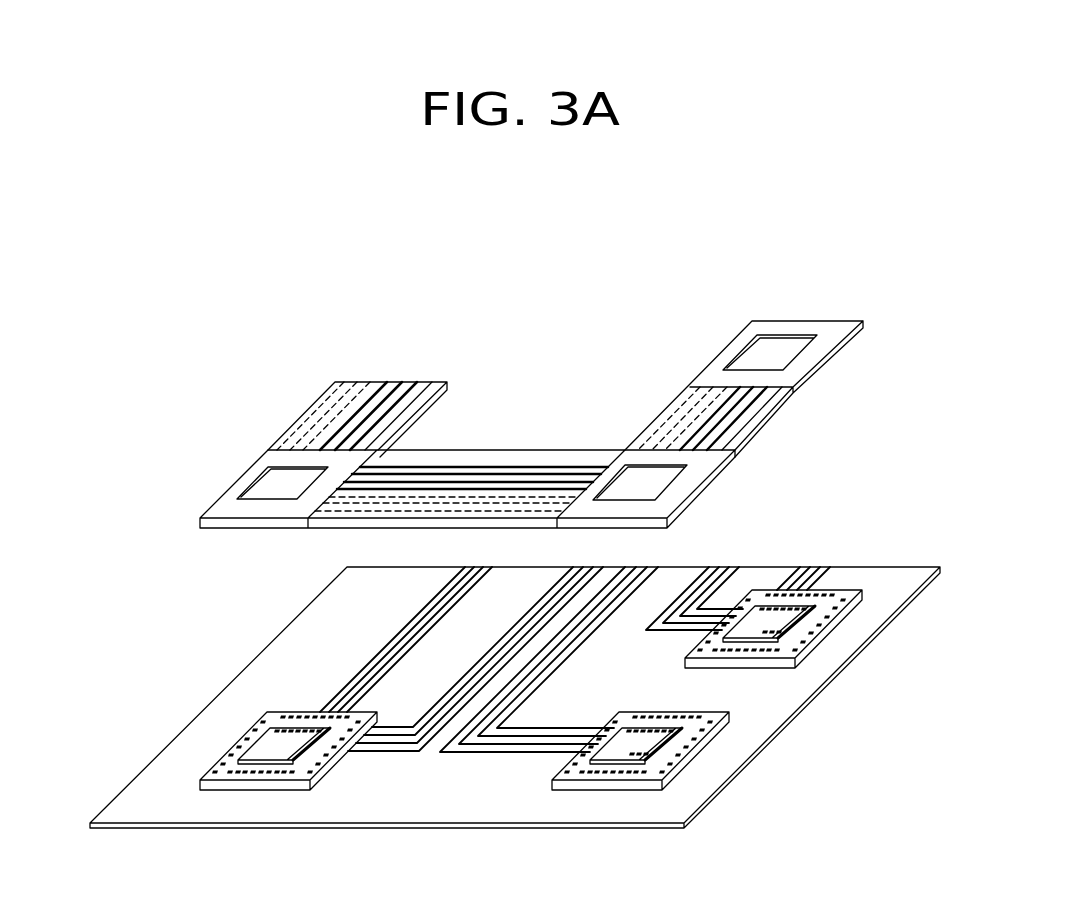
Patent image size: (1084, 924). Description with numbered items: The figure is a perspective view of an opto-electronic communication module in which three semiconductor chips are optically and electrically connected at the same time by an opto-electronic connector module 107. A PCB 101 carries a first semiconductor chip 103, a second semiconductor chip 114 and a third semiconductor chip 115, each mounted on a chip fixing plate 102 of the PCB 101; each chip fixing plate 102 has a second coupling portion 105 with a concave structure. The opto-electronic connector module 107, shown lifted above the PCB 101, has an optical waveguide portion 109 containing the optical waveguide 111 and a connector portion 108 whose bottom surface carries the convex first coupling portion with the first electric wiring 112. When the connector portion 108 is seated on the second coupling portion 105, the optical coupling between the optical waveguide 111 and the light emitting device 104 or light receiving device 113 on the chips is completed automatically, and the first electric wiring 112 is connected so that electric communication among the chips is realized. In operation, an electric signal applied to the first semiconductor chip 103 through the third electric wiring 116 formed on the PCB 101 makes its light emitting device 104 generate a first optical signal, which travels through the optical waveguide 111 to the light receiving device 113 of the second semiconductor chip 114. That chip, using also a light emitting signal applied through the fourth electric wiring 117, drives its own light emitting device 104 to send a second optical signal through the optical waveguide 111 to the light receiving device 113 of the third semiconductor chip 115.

The PCB 101 is at (178, 795).
The chip fixing plate 102 is at (298, 778).
The first semiconductor chip 103 is at (265, 760).
The light emitting device 104 is at (274, 752).
The second coupling portion 105 is at (237, 747).
The opto-electronic connector module 107 is at (478, 417).
The connector portion 108 is at (242, 473).
The optical waveguide portion 109 is at (303, 413).
The optical waveguide 111 is at (497, 467).
The first electric wiring 112 is at (337, 415).
The light receiving device 113 is at (645, 747).
The second semiconductor chip 114 is at (625, 770).
The third semiconductor chip 115 is at (775, 617).
The third electric wiring 116 is at (367, 667).
The fourth electric wiring 117 is at (500, 750).